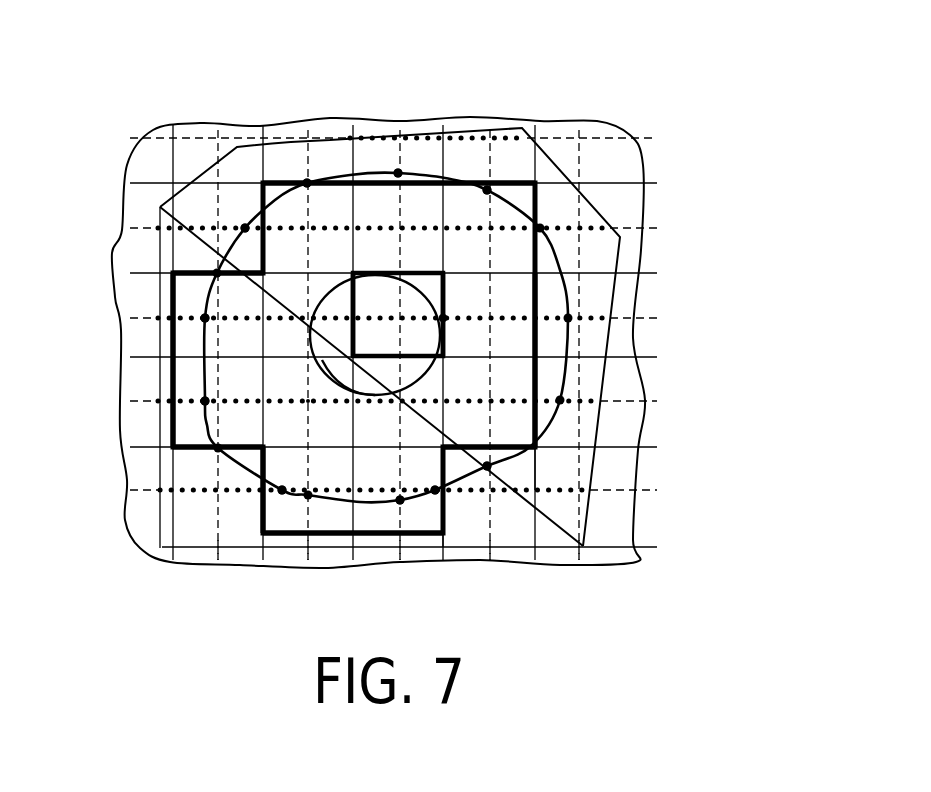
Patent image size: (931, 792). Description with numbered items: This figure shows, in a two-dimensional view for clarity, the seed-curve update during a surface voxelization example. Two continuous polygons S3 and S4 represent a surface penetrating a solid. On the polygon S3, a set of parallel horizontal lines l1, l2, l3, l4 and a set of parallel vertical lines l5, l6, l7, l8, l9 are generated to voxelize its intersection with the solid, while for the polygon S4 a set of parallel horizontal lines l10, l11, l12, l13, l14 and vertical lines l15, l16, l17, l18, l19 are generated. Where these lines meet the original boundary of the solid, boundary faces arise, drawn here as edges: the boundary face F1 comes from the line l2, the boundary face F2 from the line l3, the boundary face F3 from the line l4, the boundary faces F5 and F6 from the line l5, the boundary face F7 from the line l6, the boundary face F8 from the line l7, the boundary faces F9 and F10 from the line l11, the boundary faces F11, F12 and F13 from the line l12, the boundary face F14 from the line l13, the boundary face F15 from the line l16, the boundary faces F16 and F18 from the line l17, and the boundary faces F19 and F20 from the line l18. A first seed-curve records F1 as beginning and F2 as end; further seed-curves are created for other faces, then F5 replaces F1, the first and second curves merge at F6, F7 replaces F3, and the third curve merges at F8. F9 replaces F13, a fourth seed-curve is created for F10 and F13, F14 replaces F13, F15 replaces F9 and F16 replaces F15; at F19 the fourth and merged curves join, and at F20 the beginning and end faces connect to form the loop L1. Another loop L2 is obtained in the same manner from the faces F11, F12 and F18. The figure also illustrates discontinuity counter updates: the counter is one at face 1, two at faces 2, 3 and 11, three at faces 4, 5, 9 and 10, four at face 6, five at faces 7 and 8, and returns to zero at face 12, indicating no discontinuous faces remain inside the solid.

The boundary face F1 is at (180, 276).
The boundary face F2 is at (173, 428).
The boundary face F3 is at (207, 428).
The boundary face F5 is at (217, 273).
The boundary face F6 is at (263, 462).
The boundary face F7 is at (280, 533).
The boundary face F8 is at (367, 533).
The boundary face F9 is at (172, 195).
The boundary face F10 is at (537, 242).
The boundary face F11 is at (352, 300).
The boundary face F12 is at (443, 348).
The boundary face F13 is at (533, 341).
The boundary face F14 is at (533, 418).
The boundary face F15 is at (278, 183).
The boundary face F16 is at (437, 183).
The boundary face F18 is at (373, 362).
The boundary face F19 is at (457, 183).
The boundary face F20 is at (472, 447).
The horizontal parallel line l1 is at (150, 228).
The horizontal parallel line l2 is at (150, 318).
The horizontal parallel line l3 is at (150, 401).
The horizontal parallel line l4 is at (152, 490).
The vertical parallel line l5 is at (218, 548).
The vertical parallel line l6 is at (308, 548).
The vertical parallel line l7 is at (400, 548).
The vertical parallel line l8 is at (488, 548).
The vertical parallel line l9 is at (579, 548).
The horizontal parallel line l10 is at (637, 138).
The horizontal parallel line l11 is at (645, 228).
The horizontal parallel line l12 is at (645, 318).
The horizontal parallel line l13 is at (645, 400).
The horizontal parallel line l14 is at (645, 490).
The vertical parallel line l15 is at (218, 133).
The vertical parallel line l16 is at (308, 133).
The vertical parallel line l17 is at (398, 130).
The vertical parallel line l18 is at (488, 132).
The vertical parallel line l19 is at (583, 125).
The loop L1 is at (385, 376).
The loop L2 is at (414, 314).
The polygon S3 is at (464, 529).
The polygon S4 is at (551, 468).
The face 1 is at (217, 308).
The face 2 is at (217, 390).
The face 3 is at (302, 412).
The face 4 is at (291, 482).
The face 5 is at (386, 485).
The face 6 is at (300, 203).
The face 7 is at (389, 198).
The face 8 is at (481, 206).
The face 9 is at (271, 269).
The face 10 is at (464, 330).
The face 11 is at (433, 449).
The face 12 is at (478, 423).